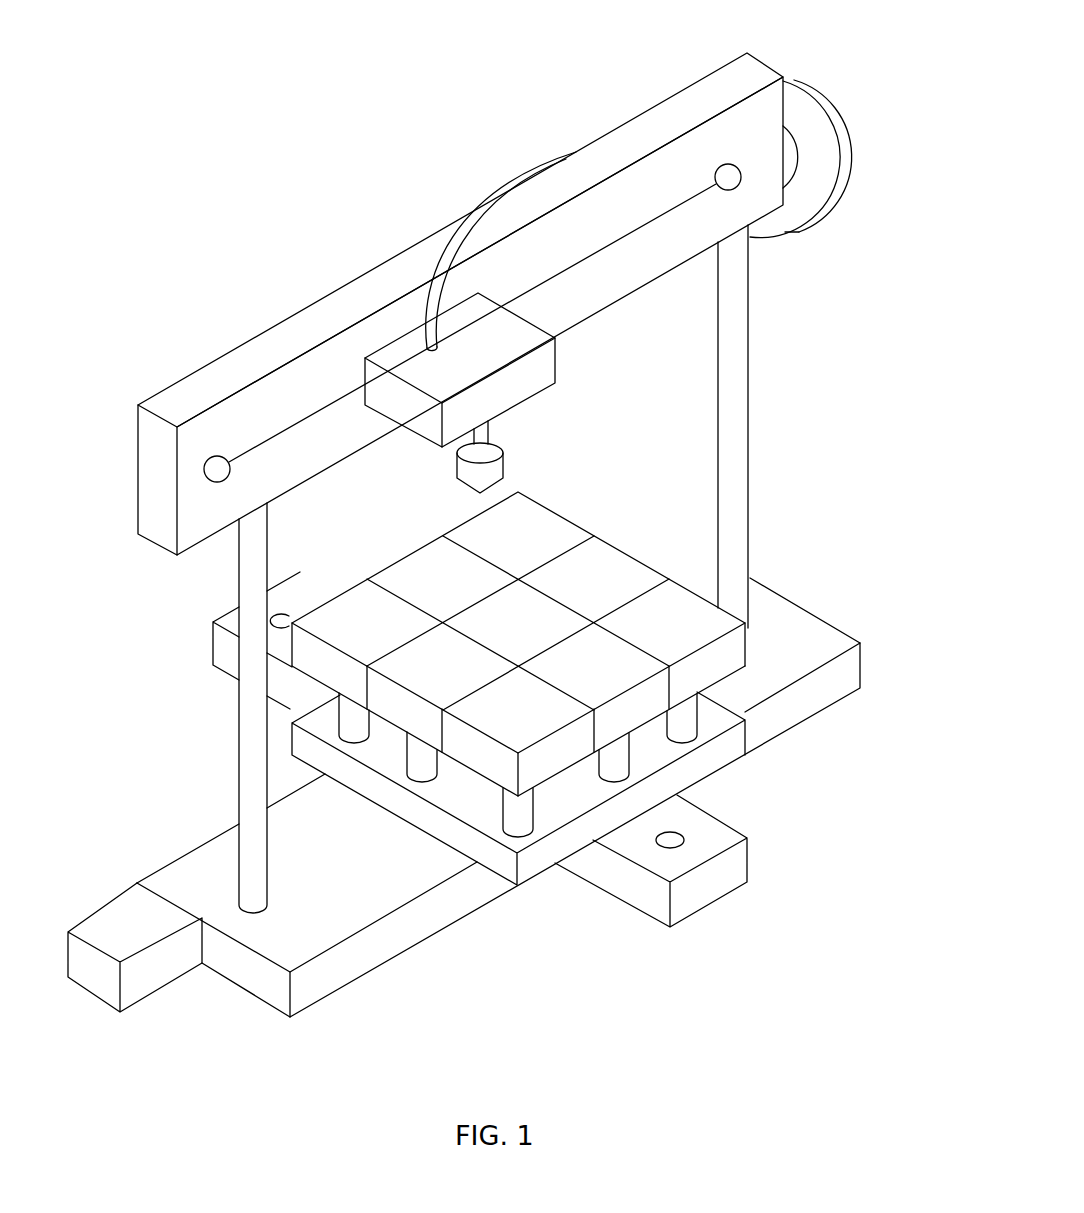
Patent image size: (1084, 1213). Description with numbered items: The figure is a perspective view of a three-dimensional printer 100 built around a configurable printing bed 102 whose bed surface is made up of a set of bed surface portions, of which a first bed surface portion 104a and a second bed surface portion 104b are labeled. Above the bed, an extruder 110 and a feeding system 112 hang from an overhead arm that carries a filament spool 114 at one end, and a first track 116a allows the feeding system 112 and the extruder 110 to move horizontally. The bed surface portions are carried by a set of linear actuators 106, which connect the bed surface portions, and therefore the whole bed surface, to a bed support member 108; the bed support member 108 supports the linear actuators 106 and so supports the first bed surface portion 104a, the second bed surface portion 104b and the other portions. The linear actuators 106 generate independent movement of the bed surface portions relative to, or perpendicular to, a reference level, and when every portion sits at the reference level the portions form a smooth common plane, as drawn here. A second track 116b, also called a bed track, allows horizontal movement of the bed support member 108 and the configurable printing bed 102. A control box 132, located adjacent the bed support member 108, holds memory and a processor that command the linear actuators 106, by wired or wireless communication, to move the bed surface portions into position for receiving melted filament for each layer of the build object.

The 3D printer 100 is at (499, 530).
The configurable printing bed 102 is at (452, 792).
The first bed surface portion 104a is at (718, 657).
The second bed surface portion 104b is at (597, 582).
The linear actuators 106 is at (685, 713).
The bed support member 108 is at (662, 778).
The extruder 110 is at (483, 473).
The feeding system 112 is at (480, 337).
The filament spool 114 is at (840, 160).
The first track 116a is at (216, 470).
The second track 116b is at (667, 842).
The control box 132 is at (100, 925).